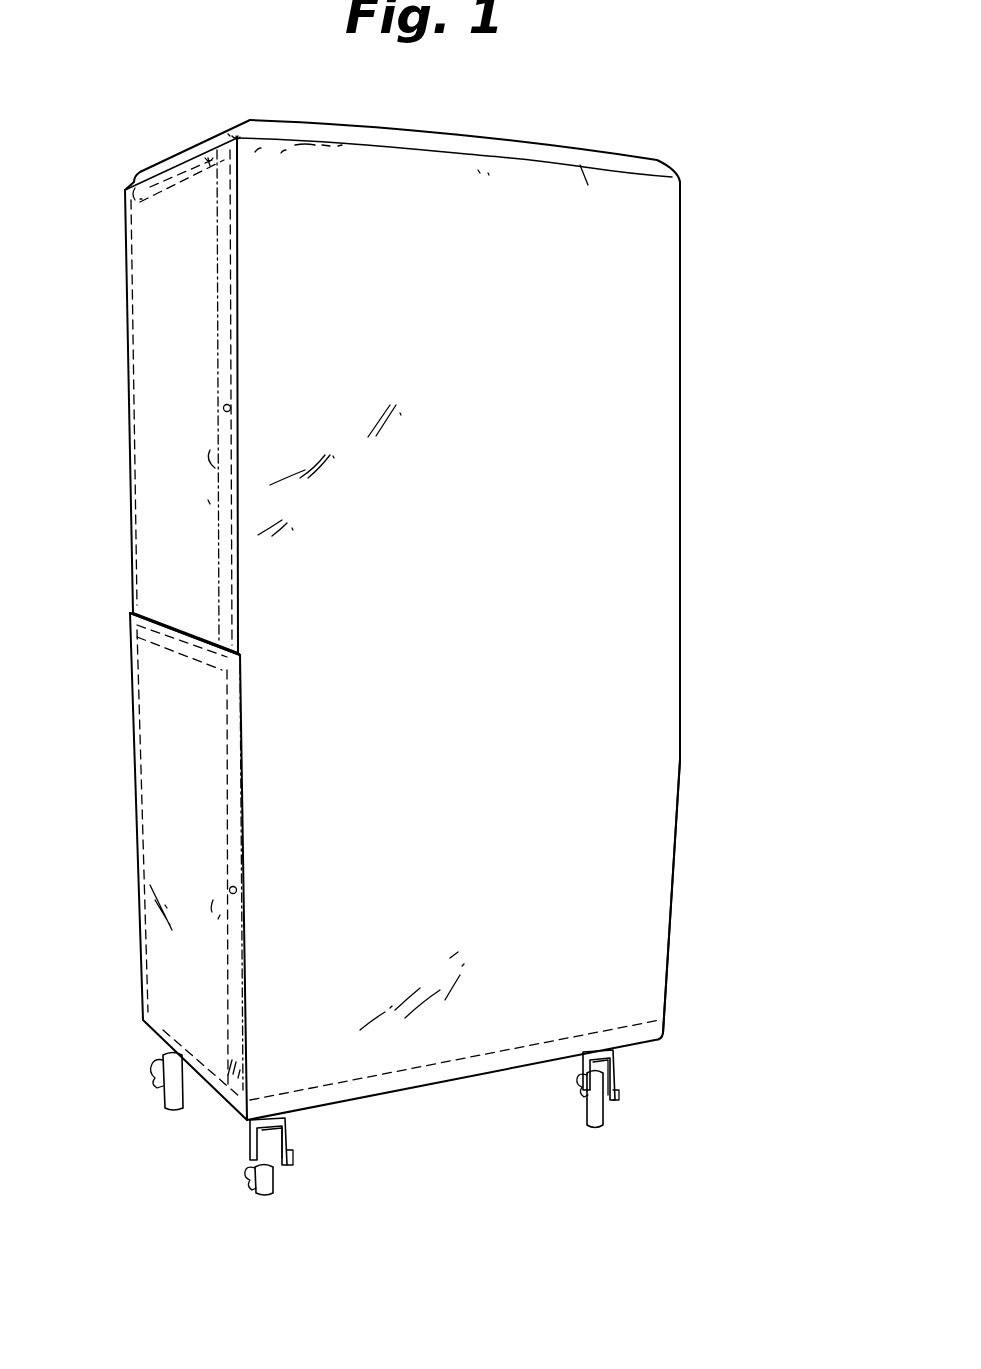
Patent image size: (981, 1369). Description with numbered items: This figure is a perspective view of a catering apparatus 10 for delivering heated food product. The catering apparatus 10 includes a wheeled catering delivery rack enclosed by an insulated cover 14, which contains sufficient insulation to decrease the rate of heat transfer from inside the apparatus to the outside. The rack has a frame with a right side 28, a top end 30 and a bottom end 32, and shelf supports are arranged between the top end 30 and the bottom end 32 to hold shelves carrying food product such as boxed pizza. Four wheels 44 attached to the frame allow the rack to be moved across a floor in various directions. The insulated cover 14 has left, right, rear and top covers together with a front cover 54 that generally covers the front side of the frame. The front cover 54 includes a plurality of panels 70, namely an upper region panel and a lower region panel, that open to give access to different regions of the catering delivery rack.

The catering apparatus 10 is at (454, 636).
The insulated cover 14 is at (638, 478).
The right side 28 is at (706, 815).
The top end 30 is at (545, 133).
The bottom end 32 is at (425, 1102).
The wheels 44 is at (263, 1173).
The front cover 54 is at (188, 386).
The panels 70 is at (160, 680).